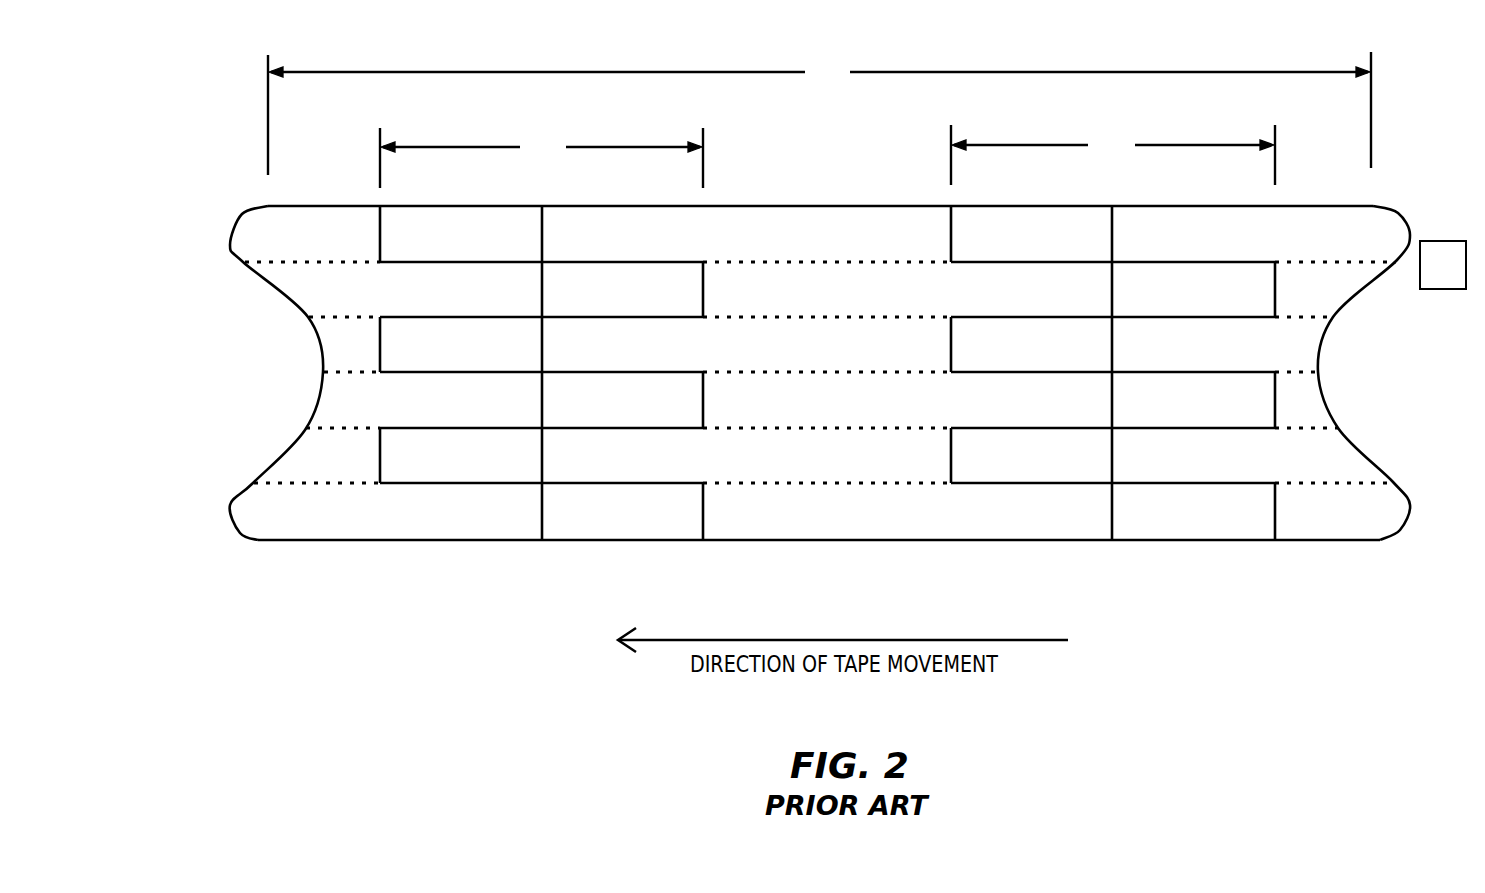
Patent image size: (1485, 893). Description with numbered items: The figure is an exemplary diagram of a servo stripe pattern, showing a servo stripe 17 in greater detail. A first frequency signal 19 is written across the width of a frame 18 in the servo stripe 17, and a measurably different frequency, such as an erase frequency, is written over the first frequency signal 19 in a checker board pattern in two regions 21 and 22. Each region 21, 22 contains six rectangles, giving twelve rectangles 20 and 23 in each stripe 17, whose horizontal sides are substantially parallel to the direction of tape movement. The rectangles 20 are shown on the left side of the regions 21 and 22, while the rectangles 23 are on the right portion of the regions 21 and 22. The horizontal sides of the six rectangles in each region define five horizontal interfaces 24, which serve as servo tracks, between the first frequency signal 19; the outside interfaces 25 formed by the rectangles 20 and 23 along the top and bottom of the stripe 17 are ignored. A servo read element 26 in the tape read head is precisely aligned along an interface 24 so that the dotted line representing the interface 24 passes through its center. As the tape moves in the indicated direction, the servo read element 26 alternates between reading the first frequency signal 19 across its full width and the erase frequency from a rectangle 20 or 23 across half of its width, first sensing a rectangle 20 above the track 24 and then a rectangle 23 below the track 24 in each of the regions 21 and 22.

The servo stripe 17 is at (236, 320).
The frame 18 is at (819, 113).
The first frequency signal 19 is at (498, 522).
The rectangles 20 is at (435, 472).
The region 21 is at (541, 158).
The region 22 is at (1113, 155).
The rectangles 23 is at (611, 518).
The horizontal interfaces 24 is at (1402, 472).
The outside interfaces 25 is at (1372, 186).
The servo read element 26 is at (1443, 265).